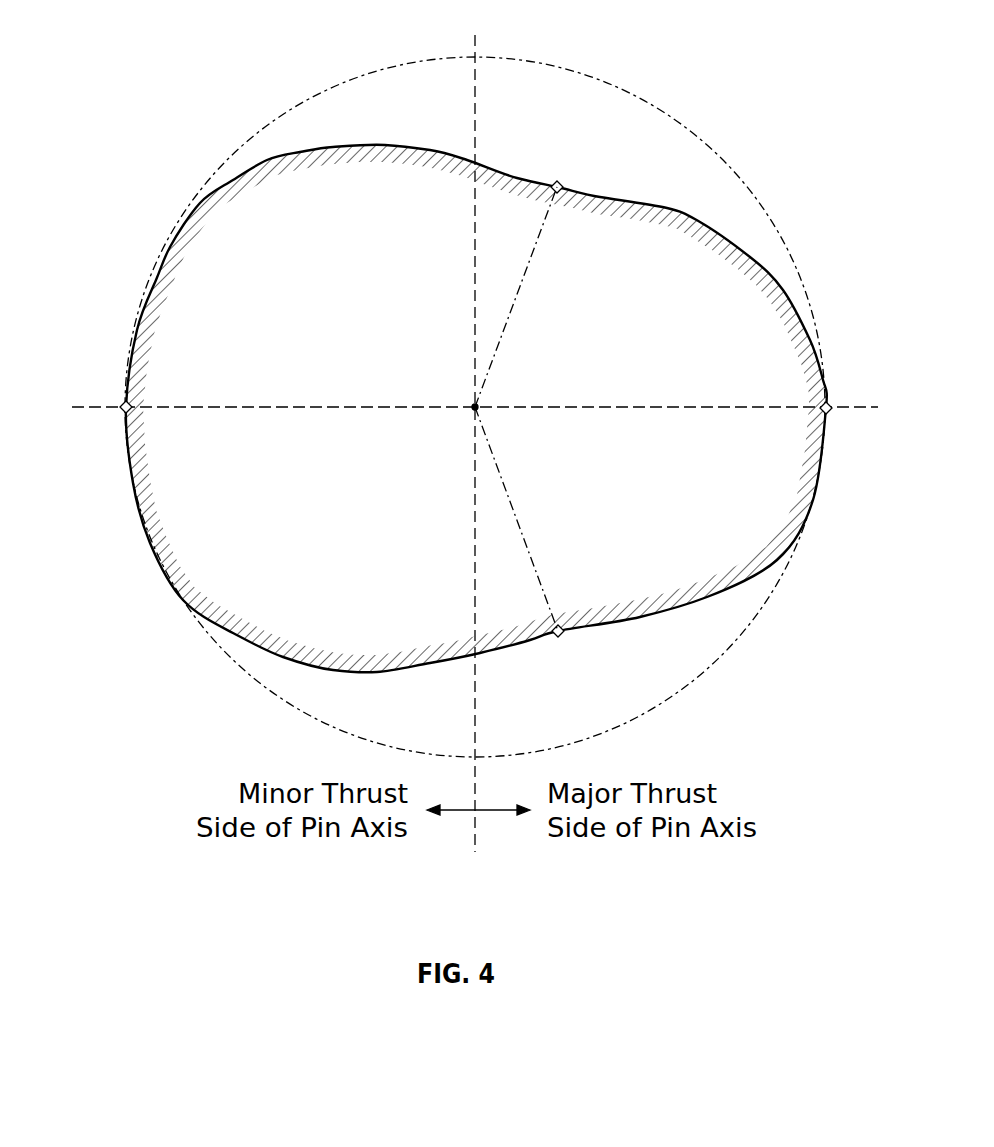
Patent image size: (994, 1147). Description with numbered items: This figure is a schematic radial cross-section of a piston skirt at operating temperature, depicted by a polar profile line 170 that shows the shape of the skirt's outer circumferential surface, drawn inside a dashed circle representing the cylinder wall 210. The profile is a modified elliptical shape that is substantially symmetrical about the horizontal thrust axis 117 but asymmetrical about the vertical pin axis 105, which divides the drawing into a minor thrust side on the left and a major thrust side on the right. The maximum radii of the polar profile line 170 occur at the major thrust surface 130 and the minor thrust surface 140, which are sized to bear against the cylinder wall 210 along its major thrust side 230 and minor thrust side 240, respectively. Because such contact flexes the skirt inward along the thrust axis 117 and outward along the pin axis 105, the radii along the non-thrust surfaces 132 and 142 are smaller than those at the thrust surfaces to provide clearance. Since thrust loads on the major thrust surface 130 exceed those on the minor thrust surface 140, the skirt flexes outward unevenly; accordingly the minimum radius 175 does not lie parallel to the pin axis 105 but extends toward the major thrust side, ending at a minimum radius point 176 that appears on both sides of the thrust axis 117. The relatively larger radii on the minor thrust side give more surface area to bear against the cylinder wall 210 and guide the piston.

The pin axis 105 is at (477, 46).
The thrust axis 117 is at (283, 407).
The major thrust surface 130 is at (828, 410).
The non-thrust surface 132 is at (531, 180).
The minor thrust surface 140 is at (124, 410).
The non-thrust surface 142 is at (386, 146).
The polar profile line 170 is at (535, 89).
The minimum radius 175 is at (521, 288).
The minimum radius point 176 is at (560, 185).
The cylinder wall 210 is at (330, 92).
The major thrust side 230 is at (822, 410).
The minor thrust side 240 is at (130, 410).